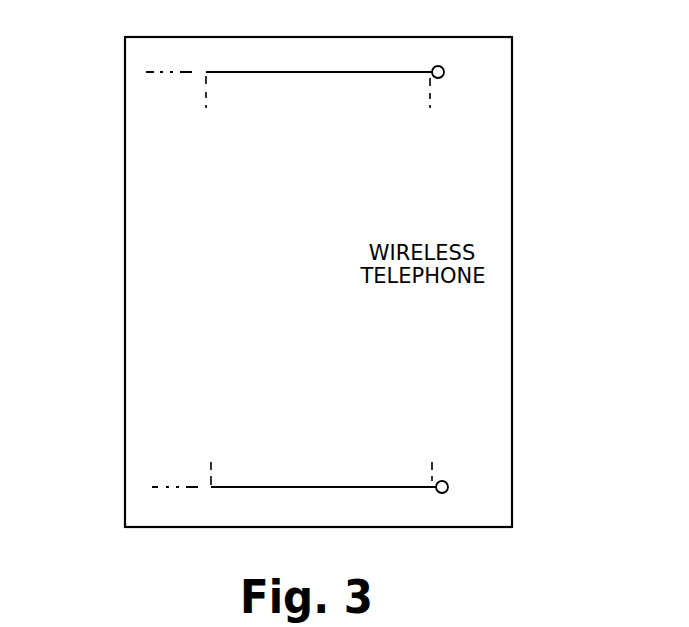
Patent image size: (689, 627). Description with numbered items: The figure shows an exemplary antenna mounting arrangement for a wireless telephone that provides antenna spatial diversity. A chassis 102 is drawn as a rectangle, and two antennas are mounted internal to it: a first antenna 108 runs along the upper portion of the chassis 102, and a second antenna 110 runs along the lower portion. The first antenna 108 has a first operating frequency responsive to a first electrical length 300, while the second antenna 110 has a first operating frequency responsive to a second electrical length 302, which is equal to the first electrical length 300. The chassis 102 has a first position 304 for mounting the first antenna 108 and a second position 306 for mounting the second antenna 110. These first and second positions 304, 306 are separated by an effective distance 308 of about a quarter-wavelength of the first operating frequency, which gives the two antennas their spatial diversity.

The chassis 102 is at (125, 193).
The first antenna 108 is at (391, 72).
The second antenna 110 is at (405, 487).
The first electrical length 300 is at (428, 111).
The second electrical length 302 is at (430, 458).
The first position 304 is at (482, 72).
The second position 306 is at (478, 487).
The effective distance 308 is at (161, 74).